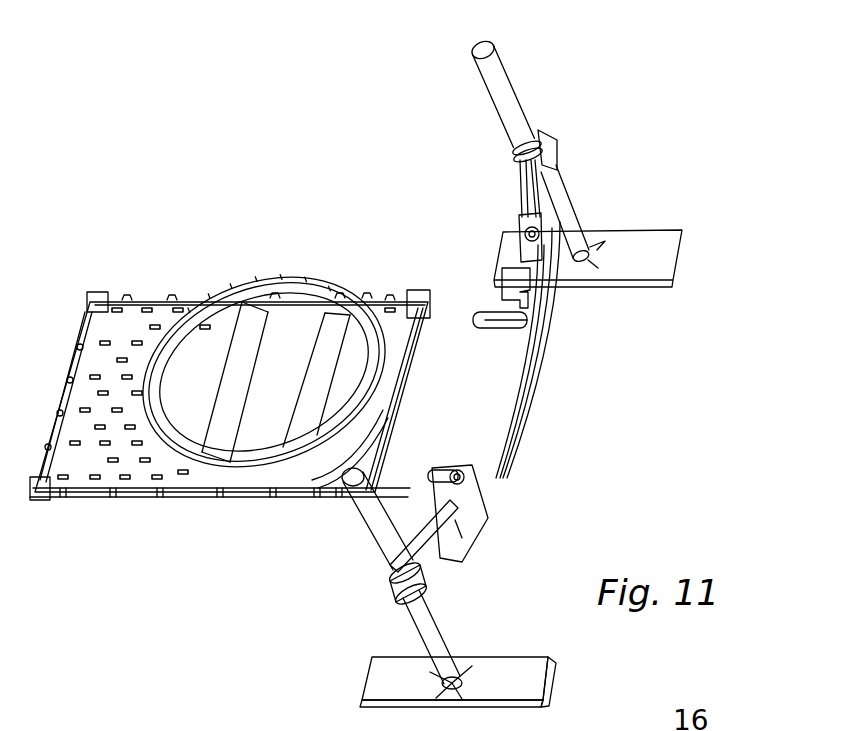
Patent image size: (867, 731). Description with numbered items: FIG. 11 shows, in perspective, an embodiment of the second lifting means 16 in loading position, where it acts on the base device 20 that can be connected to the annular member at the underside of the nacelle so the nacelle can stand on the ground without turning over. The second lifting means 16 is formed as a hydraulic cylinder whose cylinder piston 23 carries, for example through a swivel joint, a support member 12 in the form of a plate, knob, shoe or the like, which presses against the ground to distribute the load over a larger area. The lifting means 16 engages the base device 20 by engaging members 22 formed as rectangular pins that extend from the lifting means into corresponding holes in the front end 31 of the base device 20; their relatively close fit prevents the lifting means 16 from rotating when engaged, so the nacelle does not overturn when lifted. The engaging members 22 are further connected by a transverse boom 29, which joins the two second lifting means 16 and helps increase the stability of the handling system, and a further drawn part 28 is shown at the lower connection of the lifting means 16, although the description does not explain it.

The second lifting means 16 is at (560, 112).
The cylinder piston 23 is at (573, 220).
The support member 12 is at (660, 247).
The base device 20 is at (160, 312).
The front end 31 is at (398, 376).
The engaging members 22 is at (503, 320).
The transverse boom 29 is at (503, 412).
The bracket 28 is at (465, 479).